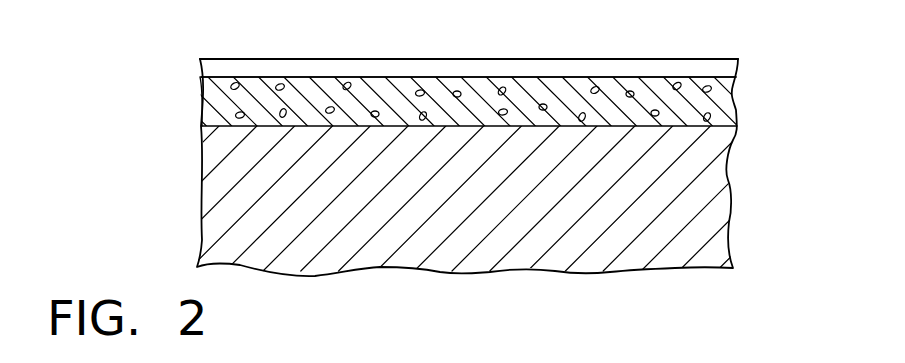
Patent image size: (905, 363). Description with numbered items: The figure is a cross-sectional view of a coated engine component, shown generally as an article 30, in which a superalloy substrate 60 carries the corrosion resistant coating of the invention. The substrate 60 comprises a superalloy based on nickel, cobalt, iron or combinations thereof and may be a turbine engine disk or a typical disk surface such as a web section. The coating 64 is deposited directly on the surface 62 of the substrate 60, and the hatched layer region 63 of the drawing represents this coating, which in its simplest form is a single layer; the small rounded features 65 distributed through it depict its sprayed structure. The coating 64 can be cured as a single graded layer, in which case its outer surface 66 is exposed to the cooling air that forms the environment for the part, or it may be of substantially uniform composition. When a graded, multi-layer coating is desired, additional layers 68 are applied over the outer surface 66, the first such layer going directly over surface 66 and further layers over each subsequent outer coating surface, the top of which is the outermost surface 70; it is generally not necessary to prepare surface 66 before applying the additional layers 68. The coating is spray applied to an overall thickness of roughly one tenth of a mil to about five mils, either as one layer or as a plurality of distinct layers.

The coated article 30 is at (625, 288).
The substrate 60 is at (730, 207).
The surface 62 is at (700, 127).
The particle-containing layer region 63 is at (208, 120).
The coating 64 is at (265, 96).
The particles 65 is at (282, 78).
The surface 66 is at (650, 77).
The additional layers 68 is at (725, 70).
The outer surface of top coating layer 70 is at (715, 67).